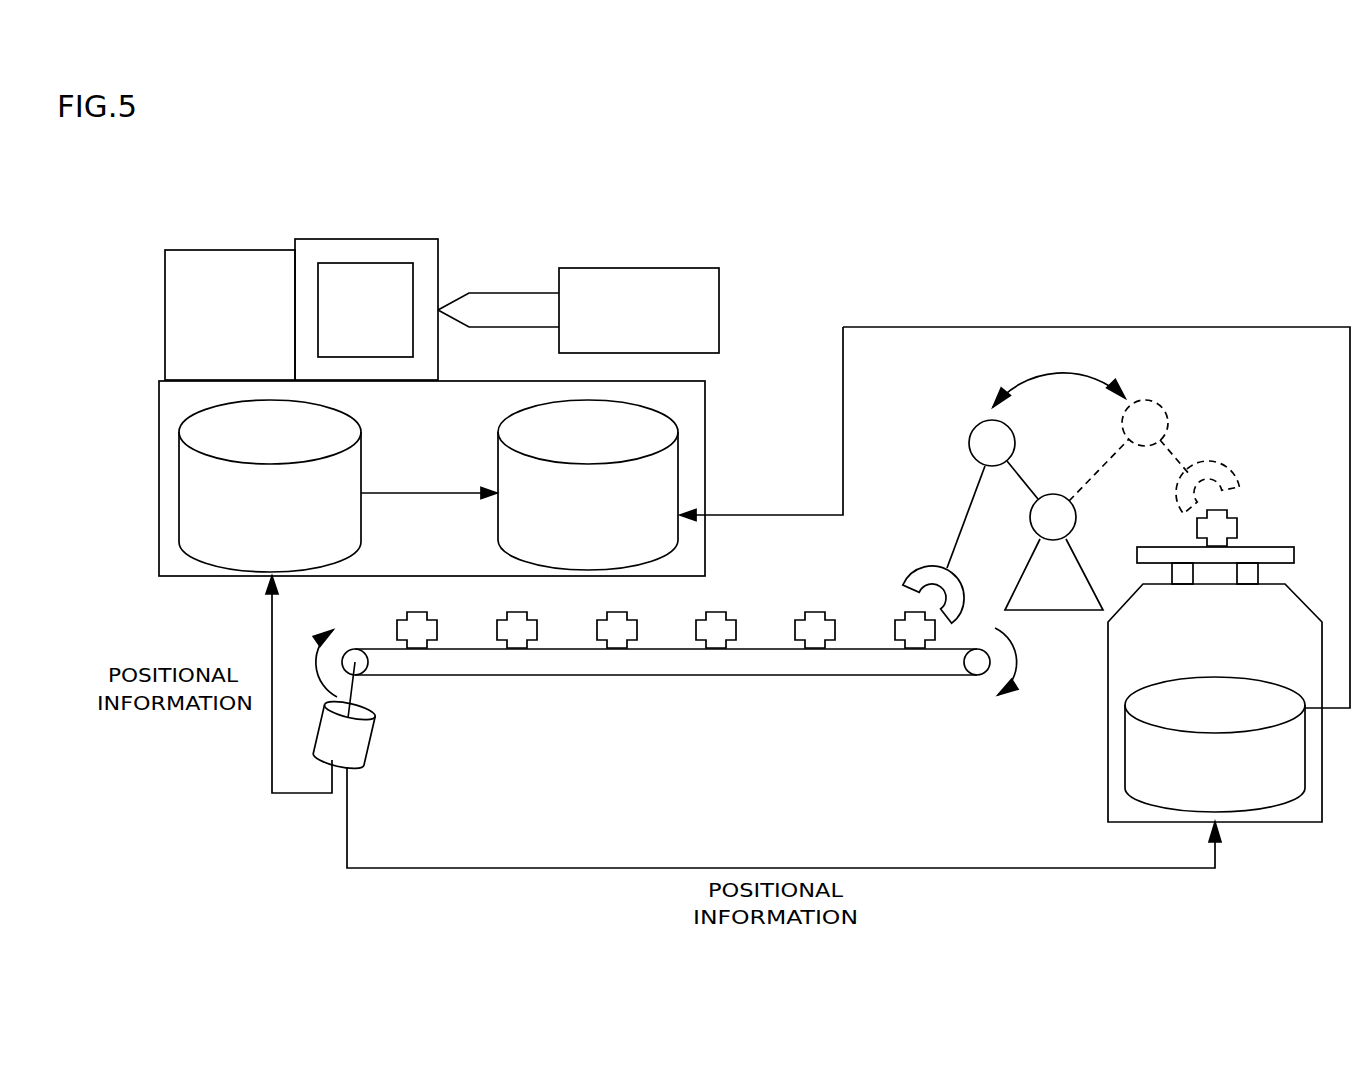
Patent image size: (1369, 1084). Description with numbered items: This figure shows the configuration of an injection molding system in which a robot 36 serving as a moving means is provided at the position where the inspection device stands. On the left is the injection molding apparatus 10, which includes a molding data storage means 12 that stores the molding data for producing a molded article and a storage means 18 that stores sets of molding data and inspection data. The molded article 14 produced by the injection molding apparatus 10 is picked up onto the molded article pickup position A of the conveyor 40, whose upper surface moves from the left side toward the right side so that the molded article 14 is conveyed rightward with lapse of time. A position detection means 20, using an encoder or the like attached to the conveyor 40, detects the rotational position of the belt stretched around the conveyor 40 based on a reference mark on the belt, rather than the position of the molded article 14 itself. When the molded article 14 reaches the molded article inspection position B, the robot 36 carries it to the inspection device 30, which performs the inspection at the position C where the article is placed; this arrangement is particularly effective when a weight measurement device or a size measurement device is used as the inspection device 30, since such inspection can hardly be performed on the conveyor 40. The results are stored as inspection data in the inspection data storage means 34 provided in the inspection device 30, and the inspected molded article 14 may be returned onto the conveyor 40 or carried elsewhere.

The injection molding apparatus 10 is at (641, 268).
The molding data storage means 12 is at (179, 493).
The molded article 14 is at (407, 615).
The storage means 18 is at (679, 466).
The position detection means 20 is at (372, 742).
The inspection device 30 is at (1178, 713).
The inspection data storage means 34 is at (1253, 807).
The robot 36 is at (1057, 611).
The conveyor 40 is at (667, 677).
The molded article pickup position A is at (450, 641).
The molded article inspection position B is at (882, 635).
The position C on inspection device C is at (1250, 531).